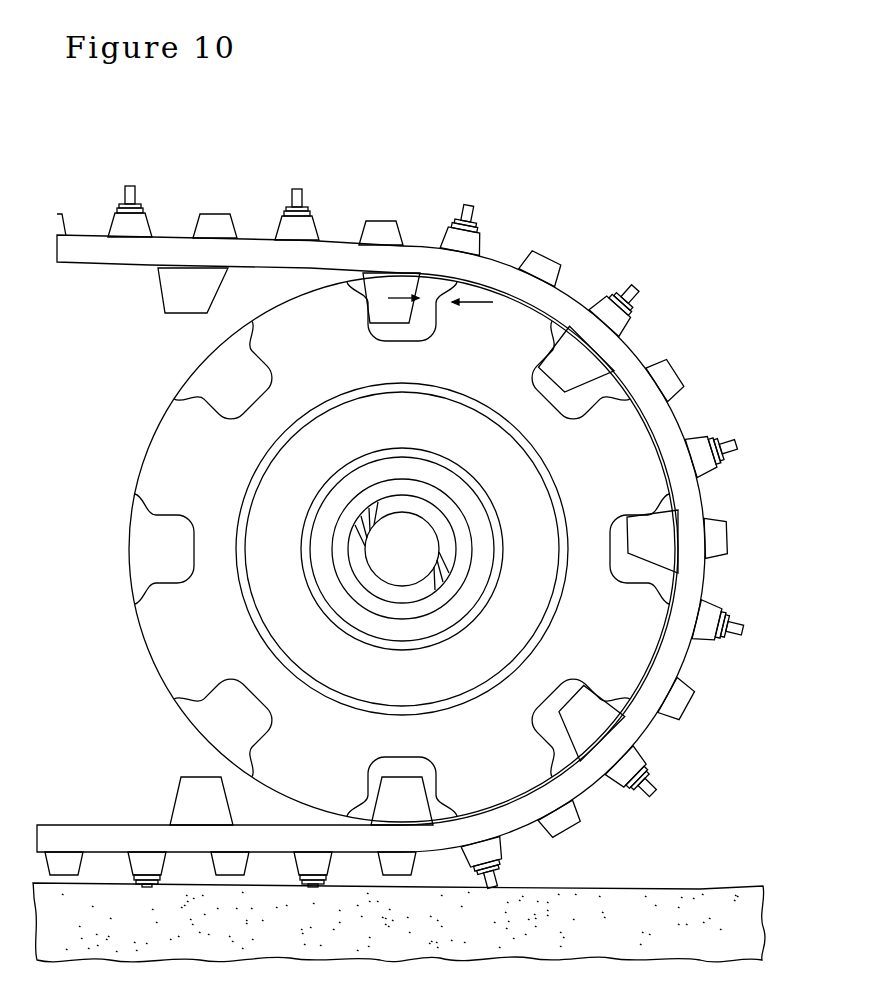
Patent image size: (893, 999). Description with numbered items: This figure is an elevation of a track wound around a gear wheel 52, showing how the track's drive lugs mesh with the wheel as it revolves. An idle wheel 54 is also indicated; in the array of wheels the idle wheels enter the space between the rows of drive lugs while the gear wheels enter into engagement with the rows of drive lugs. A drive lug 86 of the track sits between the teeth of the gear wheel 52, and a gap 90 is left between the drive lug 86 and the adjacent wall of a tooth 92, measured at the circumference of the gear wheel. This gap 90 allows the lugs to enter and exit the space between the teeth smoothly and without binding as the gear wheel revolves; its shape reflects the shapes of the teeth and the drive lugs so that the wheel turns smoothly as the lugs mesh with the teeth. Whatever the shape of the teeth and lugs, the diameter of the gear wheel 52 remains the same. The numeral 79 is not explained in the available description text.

The gear wheel 52 is at (134, 522).
The idle wheel 54 is at (133, 587).
The traction stud 79 is at (636, 347).
The drive lug 86 is at (387, 322).
The gap 90 is at (436, 298).
The tooth 92 is at (490, 284).